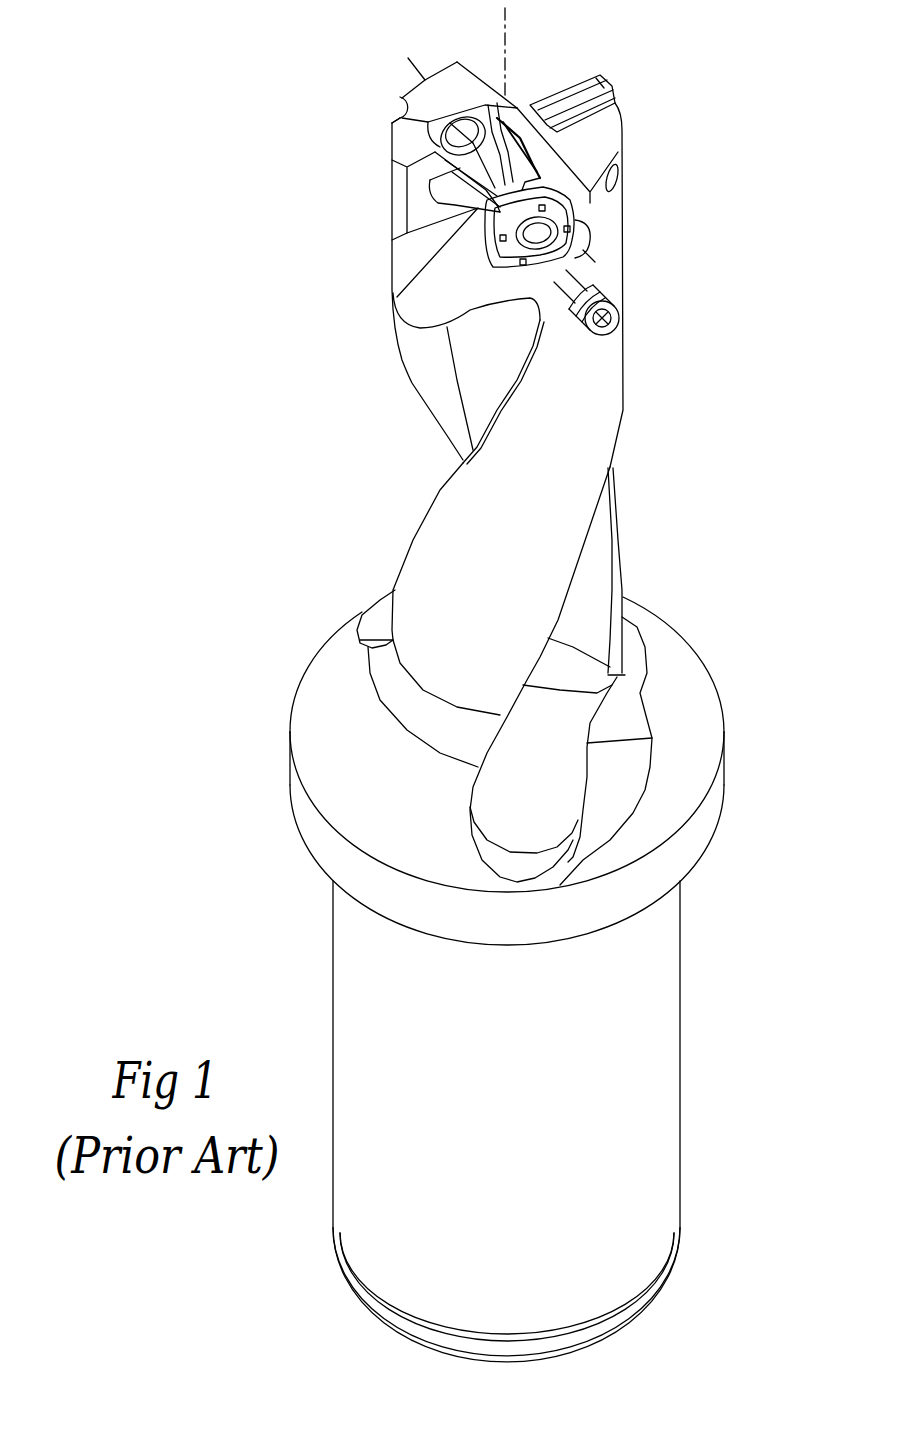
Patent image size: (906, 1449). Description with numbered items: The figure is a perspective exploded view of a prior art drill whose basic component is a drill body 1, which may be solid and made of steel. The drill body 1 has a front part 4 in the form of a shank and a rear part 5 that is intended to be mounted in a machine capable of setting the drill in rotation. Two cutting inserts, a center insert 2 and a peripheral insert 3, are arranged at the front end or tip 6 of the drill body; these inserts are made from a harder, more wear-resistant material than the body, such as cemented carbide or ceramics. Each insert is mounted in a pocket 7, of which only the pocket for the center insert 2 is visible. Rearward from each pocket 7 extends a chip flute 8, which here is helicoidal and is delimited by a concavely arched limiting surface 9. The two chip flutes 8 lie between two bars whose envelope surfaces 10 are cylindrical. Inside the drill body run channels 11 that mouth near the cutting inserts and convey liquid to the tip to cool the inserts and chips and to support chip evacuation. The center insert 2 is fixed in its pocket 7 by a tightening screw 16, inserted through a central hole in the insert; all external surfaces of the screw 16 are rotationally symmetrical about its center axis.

The drill body 1 is at (508, 53).
The center insert 2 is at (482, 255).
The peripheral insert 3 is at (610, 75).
The front part 4 is at (623, 385).
The rear part 5 is at (684, 983).
The front end or tip 6 is at (445, 58).
The pocket 7 is at (438, 128).
The chip flute 8 is at (478, 397).
The limiting surface 9 is at (484, 361).
The envelope surface 10 is at (537, 527).
The channel 11 is at (405, 112).
The tightening screw 16 is at (570, 320).